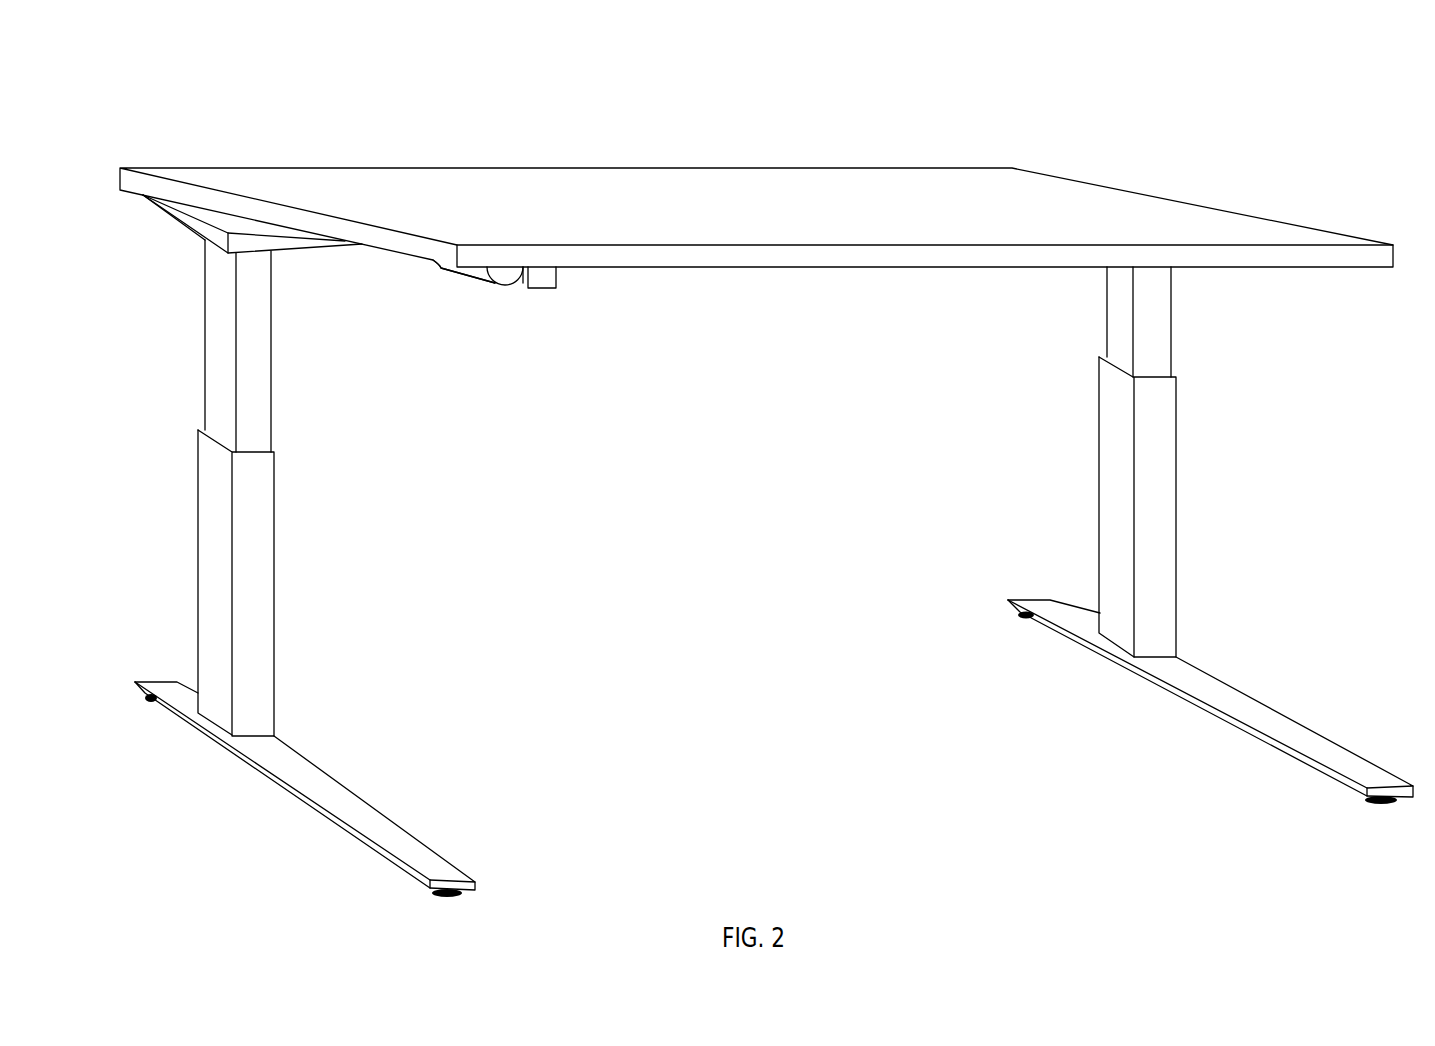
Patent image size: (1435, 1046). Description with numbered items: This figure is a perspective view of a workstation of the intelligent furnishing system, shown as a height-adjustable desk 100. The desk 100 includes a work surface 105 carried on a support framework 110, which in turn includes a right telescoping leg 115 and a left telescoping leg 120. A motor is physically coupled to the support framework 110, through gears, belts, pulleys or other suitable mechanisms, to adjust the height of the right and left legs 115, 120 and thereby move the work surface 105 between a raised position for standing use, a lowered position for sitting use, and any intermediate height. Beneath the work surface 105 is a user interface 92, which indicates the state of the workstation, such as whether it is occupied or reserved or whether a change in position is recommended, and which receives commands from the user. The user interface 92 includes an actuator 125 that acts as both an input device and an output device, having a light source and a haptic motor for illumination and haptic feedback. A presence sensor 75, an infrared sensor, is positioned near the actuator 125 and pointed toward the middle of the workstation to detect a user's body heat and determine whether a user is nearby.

The height-adjustable desk 100 is at (176, 88).
The work surface 105 is at (850, 168).
The support framework 110 is at (1304, 358).
The right telescoping leg 115 is at (1160, 523).
The left telescoping leg 120 is at (258, 530).
The actuator 125 is at (493, 286).
The presence sensor 75 is at (540, 280).
The user interface 92 is at (437, 288).